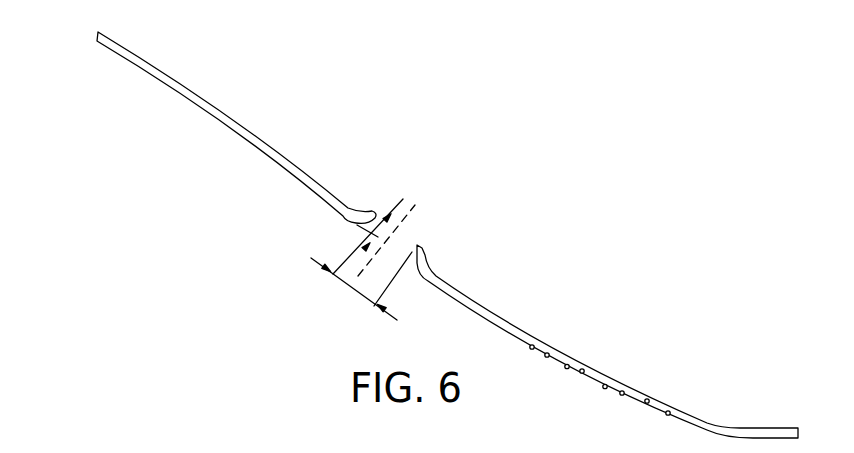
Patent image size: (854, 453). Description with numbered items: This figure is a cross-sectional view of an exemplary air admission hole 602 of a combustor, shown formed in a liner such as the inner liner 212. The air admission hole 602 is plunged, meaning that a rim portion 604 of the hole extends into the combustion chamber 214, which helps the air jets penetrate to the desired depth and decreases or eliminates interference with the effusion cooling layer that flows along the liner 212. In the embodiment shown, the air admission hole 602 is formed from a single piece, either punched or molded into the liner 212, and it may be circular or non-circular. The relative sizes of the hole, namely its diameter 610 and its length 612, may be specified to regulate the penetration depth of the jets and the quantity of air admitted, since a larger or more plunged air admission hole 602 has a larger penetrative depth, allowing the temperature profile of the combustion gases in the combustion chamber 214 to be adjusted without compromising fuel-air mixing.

The inner liner 212 is at (255, 150).
The combustion chamber 214 is at (240, 127).
The air admission hole 602 is at (416, 228).
The rim portion 604 is at (420, 253).
The diameter 610 is at (346, 284).
The length 612 is at (403, 200).